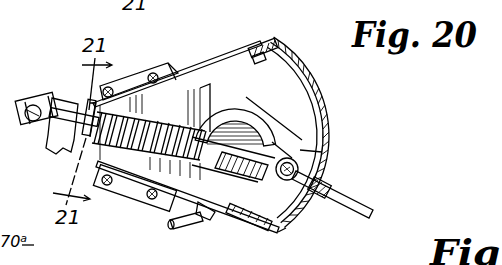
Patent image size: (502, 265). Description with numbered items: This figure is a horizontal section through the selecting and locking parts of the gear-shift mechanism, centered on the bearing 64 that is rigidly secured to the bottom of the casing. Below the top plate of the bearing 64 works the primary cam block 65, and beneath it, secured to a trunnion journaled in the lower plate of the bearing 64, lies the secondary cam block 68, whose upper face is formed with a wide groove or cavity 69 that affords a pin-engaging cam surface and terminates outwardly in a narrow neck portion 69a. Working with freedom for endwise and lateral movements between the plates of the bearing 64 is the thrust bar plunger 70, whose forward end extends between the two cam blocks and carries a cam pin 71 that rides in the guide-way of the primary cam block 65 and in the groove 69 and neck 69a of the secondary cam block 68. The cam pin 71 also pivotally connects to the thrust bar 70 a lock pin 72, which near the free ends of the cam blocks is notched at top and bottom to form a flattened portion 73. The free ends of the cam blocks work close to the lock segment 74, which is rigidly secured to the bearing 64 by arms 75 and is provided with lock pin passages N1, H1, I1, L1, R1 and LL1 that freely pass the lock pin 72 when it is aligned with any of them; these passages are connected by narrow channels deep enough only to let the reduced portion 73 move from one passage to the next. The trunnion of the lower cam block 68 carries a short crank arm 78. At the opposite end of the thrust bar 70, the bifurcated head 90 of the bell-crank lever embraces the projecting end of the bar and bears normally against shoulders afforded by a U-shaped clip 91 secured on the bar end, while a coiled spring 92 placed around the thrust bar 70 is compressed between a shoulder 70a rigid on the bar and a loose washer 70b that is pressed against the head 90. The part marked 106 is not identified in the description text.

The bearing 64 is at (168, 101).
The primary cam block 65 is at (322, 152).
The secondary cam block 68 is at (276, 128).
The groove or cavity 69 is at (256, 128).
The neck portion 69a is at (260, 191).
The thrust bar plunger 70 is at (224, 134).
The shoulder 70a is at (203, 105).
The washer 70b is at (117, 99).
The cam pin 71 is at (287, 232).
The lock pin 72 is at (353, 203).
The flattened portion 73 is at (318, 187).
The lock segment 74 is at (303, 60).
The arms 75 is at (203, 65).
The crank arm 78 is at (205, 218).
The bifurcated head 90 is at (62, 125).
The U-shaped clip 91 is at (30, 105).
The coiled spring 92 is at (142, 167).
The pin 106 is at (183, 230).
The lock pin passage N1 is at (305, 208).
The lock pin passage H1 is at (323, 167).
The lock pin passage L1 is at (332, 133).
The lock pin passage R1 is at (340, 107).
The lock pin passage LL1 is at (330, 97).
The lock pin passage I1 is at (312, 134).